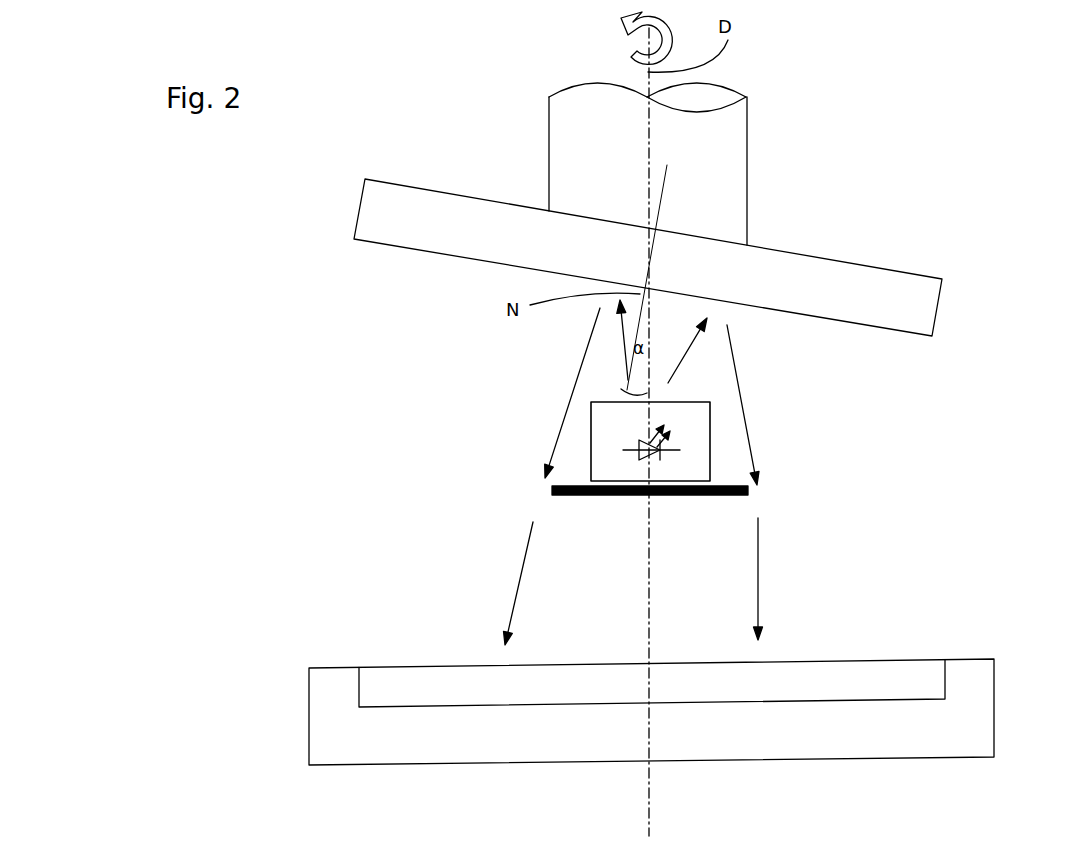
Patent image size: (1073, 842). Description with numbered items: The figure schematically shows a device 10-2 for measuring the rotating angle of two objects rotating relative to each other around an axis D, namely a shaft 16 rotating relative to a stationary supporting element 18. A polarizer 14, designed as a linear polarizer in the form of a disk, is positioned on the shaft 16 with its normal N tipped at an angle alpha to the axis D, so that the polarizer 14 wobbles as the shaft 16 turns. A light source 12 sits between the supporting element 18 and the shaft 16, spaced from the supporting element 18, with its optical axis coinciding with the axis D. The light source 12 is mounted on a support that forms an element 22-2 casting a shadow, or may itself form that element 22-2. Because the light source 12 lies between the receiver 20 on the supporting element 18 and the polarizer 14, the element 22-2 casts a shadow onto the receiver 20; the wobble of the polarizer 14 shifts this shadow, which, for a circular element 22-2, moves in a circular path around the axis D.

The device 10-2 is at (931, 124).
The light source 12 is at (605, 442).
The polarizer 14 is at (920, 310).
The shaft 16 is at (723, 195).
The supporting element 18 is at (967, 737).
The receiver 20 is at (908, 670).
The element that casts a shadow 22-2 is at (732, 482).